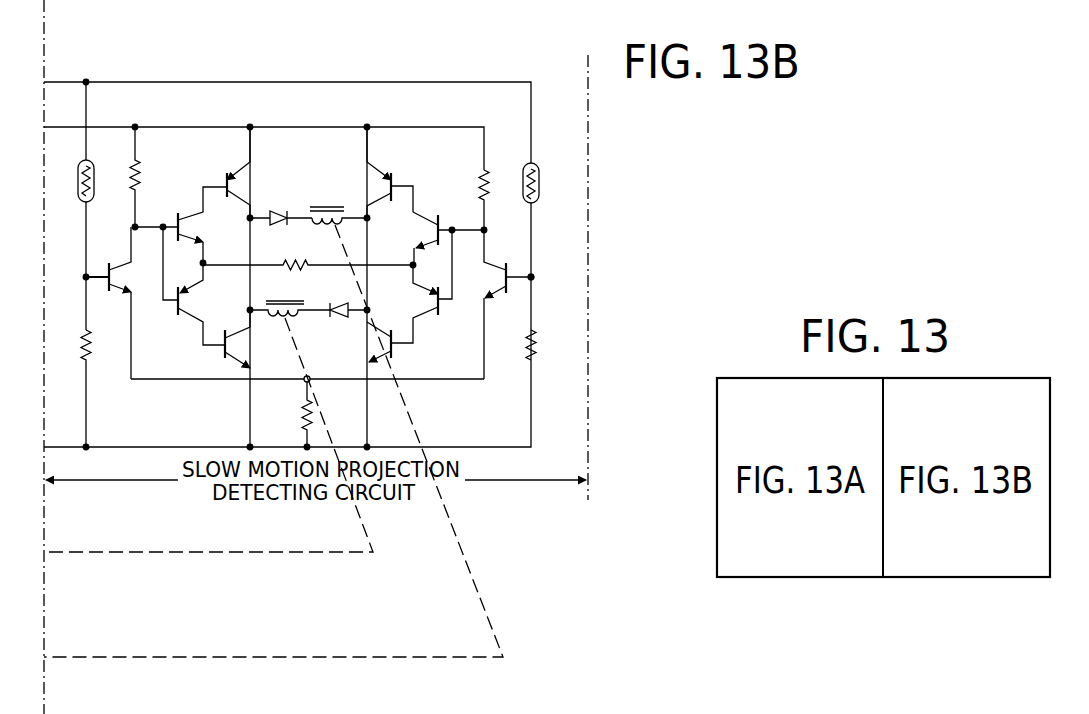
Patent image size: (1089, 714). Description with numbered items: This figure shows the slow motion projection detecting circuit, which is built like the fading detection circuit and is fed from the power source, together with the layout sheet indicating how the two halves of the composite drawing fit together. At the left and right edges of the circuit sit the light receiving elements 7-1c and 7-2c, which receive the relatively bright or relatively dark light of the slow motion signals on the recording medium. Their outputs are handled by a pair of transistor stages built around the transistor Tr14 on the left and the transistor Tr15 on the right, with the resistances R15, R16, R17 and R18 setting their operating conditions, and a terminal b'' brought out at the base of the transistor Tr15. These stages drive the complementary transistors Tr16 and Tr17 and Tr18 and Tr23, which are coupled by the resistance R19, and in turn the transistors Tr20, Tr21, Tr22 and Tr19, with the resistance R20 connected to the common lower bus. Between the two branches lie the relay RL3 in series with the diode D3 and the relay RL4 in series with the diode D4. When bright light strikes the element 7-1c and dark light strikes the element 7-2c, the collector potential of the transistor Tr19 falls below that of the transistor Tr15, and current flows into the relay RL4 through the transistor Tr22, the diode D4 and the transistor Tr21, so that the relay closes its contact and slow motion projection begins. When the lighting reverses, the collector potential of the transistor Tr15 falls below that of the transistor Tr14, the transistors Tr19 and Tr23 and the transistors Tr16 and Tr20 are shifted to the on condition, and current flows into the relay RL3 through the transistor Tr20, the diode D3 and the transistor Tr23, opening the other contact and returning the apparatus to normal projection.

The light receiving element 7-1c is at (103, 206).
The light receiving element 7-2c is at (537, 170).
The resistor R15 is at (92, 338).
The resistor R16 is at (538, 340).
The resistor R17 is at (141, 174).
The resistor R18 is at (480, 186).
The resistor R19 is at (308, 249).
The resistor R20 is at (312, 410).
The relay RL3 is at (338, 204).
The relay RL4 is at (290, 298).
The diode D3 is at (280, 211).
The diode D4 is at (340, 318).
The transistor Tr14 is at (112, 268).
The transistor Tr15 is at (504, 268).
The transistor Tr16 is at (186, 205).
The transistor Tr17 is at (206, 286).
The transistor Tr18 is at (434, 232).
The transistor Tr19 is at (427, 308).
The transistor Tr20 is at (229, 176).
The transistor Tr21 is at (265, 339).
The transistor Tr22 is at (390, 178).
The transistor Tr23 is at (393, 333).
The terminal b'' is at (543, 283).